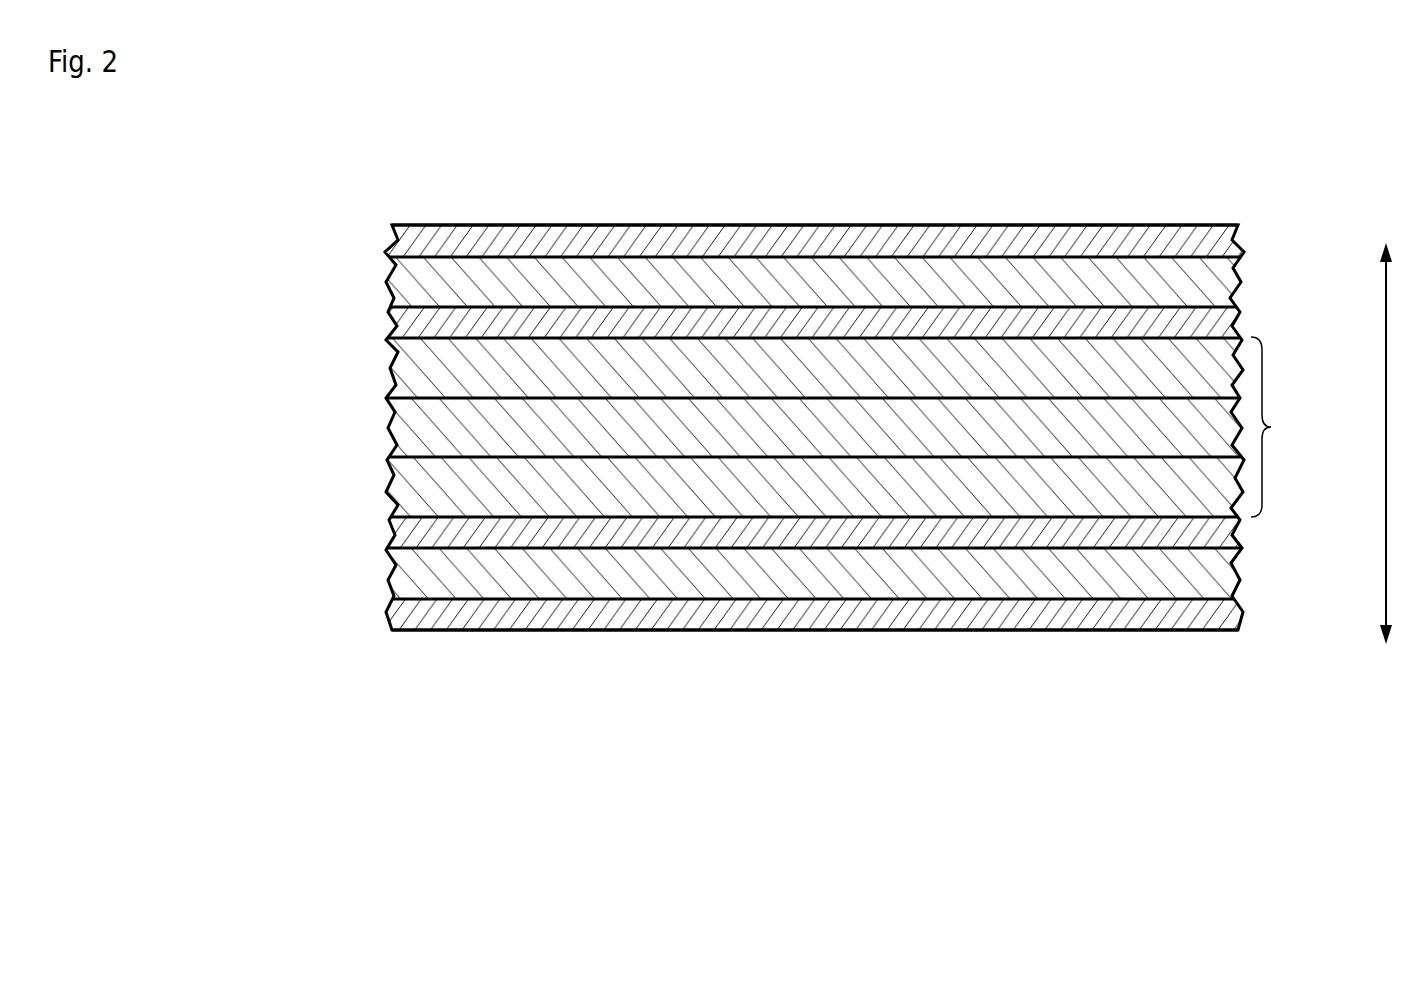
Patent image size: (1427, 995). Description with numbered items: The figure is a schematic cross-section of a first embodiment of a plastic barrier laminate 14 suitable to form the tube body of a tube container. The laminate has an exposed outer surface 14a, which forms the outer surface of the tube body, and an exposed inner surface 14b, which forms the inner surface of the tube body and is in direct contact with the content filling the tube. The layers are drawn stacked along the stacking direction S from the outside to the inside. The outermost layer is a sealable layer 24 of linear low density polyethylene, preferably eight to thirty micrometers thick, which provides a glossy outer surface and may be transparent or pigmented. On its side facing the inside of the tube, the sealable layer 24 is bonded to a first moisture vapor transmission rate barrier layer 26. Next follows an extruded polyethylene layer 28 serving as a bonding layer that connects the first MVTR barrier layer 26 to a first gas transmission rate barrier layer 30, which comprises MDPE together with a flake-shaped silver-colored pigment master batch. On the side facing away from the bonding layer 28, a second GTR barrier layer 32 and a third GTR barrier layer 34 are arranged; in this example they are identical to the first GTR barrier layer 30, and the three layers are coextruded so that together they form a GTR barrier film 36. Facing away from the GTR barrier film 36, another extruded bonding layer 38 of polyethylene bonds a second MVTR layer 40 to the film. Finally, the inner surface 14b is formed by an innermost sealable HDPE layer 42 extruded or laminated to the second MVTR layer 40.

The plastic barrier laminate 14 is at (308, 146).
The exposed outer surface 14a is at (577, 212).
The exposed inner surface 14b is at (627, 645).
The sealable layer 24 is at (405, 243).
The first moisture vapor transmission rate barrier layer 26 is at (405, 287).
The extruded polyethylene layer 28 is at (405, 323).
The first gas transmission rate barrier layer 30 is at (407, 370).
The second GTR barrier layer 32 is at (407, 425).
The third GTR barrier layer 34 is at (407, 492).
The GTR barrier film 36 is at (1277, 427).
The extruded bonding layer 38 is at (405, 535).
The second MVTR layer 40 is at (405, 580).
The innermost sealable HDPE layer 42 is at (405, 617).
The stacking direction S is at (1387, 582).